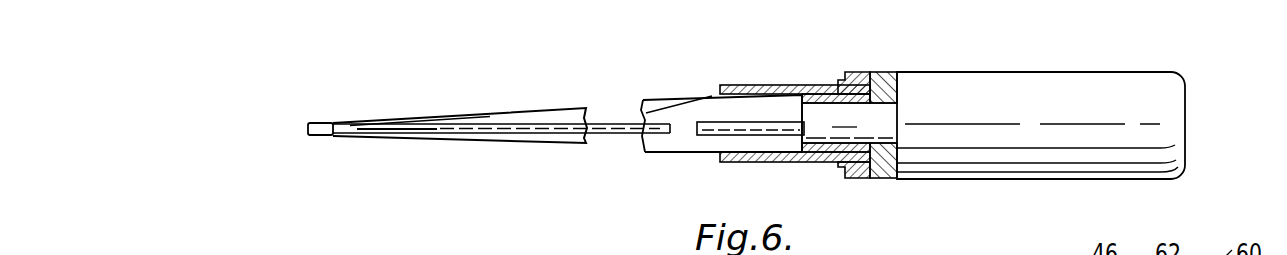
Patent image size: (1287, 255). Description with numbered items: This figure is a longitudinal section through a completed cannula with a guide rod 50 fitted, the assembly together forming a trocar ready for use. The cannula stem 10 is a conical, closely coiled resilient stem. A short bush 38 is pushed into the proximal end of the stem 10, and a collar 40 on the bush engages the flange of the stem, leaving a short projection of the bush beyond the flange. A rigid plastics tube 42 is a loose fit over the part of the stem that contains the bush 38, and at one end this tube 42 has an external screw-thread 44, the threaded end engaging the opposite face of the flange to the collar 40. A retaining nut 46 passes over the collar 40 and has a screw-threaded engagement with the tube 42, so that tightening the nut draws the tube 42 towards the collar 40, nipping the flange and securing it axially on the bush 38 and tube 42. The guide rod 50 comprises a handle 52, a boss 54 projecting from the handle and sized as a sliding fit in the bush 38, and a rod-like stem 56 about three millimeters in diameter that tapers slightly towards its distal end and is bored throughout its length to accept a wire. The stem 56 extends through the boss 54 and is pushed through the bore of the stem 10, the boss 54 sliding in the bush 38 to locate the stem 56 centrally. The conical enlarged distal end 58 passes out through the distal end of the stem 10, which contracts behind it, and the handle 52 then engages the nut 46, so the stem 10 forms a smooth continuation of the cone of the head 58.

The cannula stem 10 is at (451, 118).
The enlarged distal end 58 is at (318, 125).
The guide rod 50 is at (601, 136).
The rod-like stem 56 is at (634, 134).
The boss 54 is at (823, 135).
The rigid plastics tube 42 is at (748, 85).
The bush 38 is at (820, 95).
The collar 40 is at (867, 82).
The external screw-thread 44 is at (858, 177).
The retaining nut 46 is at (886, 73).
The handle 52 is at (1039, 85).